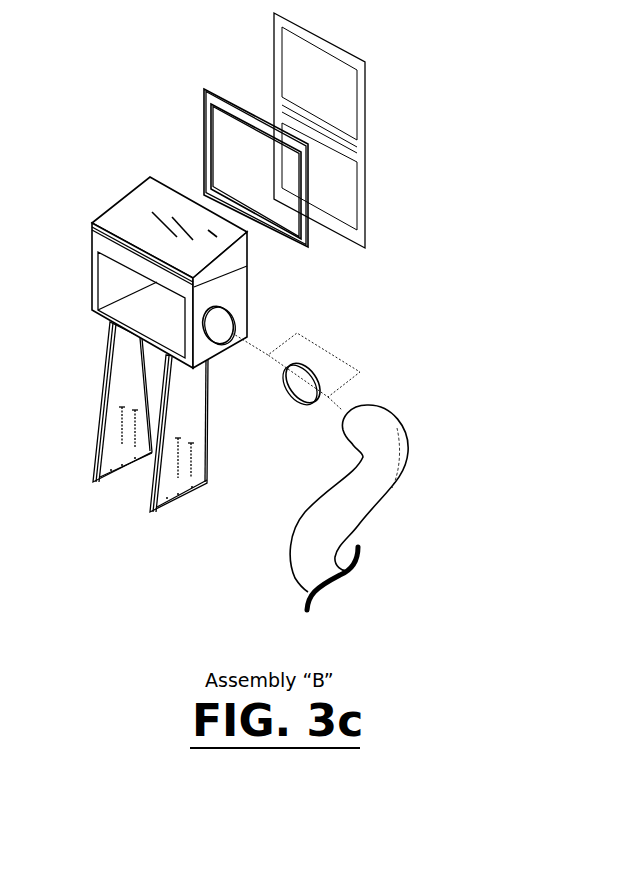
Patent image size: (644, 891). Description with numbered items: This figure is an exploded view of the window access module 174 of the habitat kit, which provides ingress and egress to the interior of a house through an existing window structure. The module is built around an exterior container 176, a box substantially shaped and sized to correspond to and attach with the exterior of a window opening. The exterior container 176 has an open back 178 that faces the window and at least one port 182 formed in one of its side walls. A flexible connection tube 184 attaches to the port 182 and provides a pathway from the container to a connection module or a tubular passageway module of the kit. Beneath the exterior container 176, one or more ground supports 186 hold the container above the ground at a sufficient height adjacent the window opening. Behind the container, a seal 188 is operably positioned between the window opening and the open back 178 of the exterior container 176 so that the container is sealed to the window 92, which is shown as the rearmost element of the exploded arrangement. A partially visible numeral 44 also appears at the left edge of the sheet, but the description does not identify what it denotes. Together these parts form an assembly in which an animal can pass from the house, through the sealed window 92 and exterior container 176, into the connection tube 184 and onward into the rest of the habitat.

The window access module 174 is at (137, 130).
The exterior container 176 is at (253, 285).
The open back 178 is at (247, 323).
The port 182 is at (217, 343).
The flexible connection tube 184 is at (405, 461).
The ground supports 186 is at (155, 470).
The seal 188 is at (305, 178).
The window 92 is at (374, 128).
The partial numeral 44 is at (10, 129).